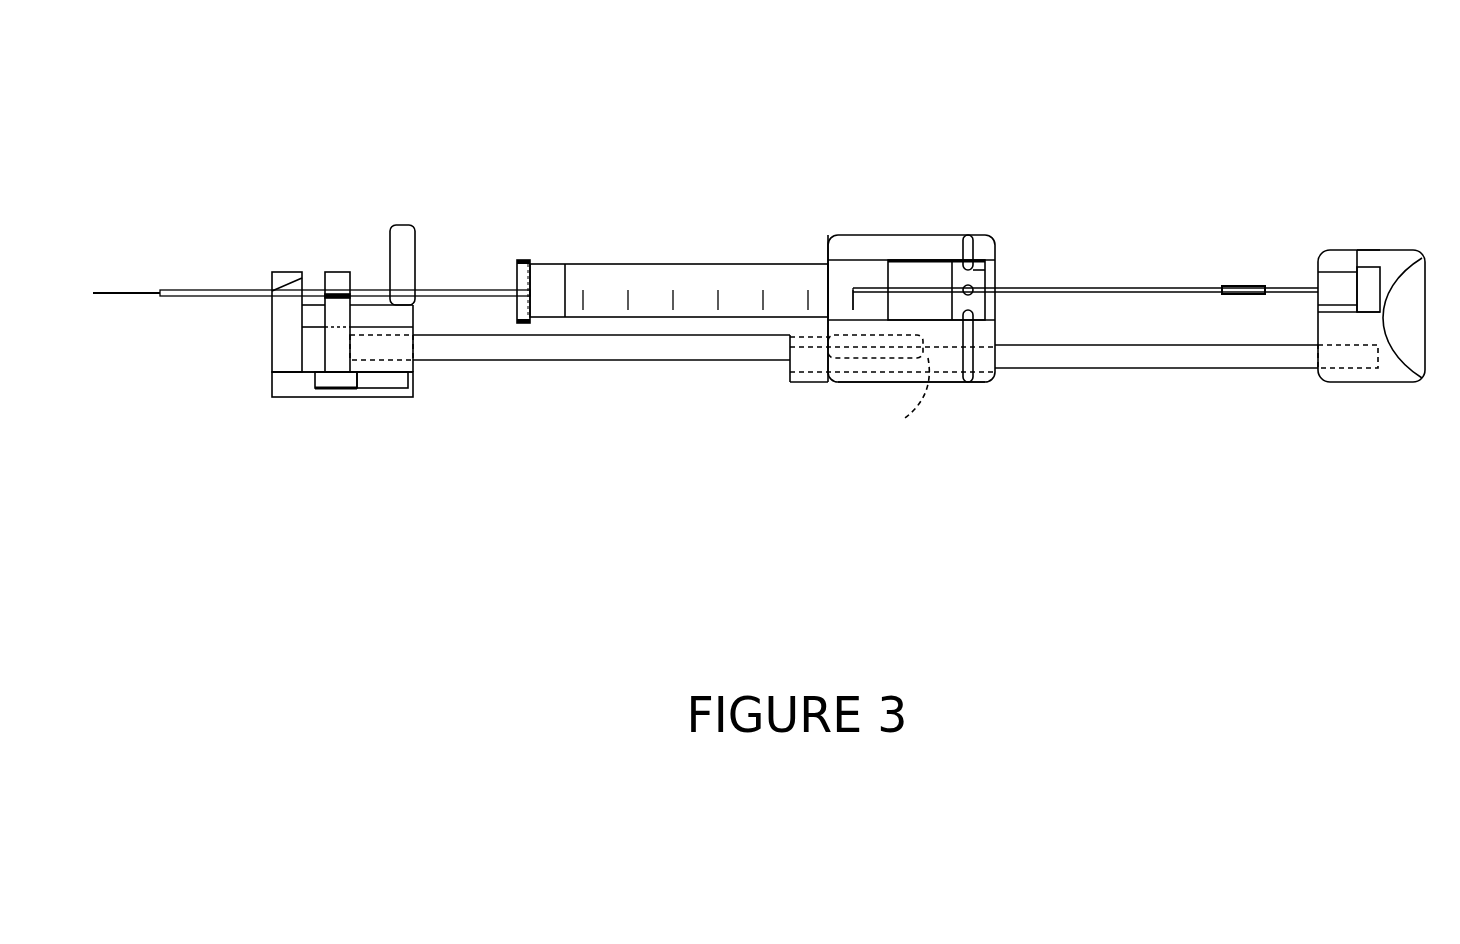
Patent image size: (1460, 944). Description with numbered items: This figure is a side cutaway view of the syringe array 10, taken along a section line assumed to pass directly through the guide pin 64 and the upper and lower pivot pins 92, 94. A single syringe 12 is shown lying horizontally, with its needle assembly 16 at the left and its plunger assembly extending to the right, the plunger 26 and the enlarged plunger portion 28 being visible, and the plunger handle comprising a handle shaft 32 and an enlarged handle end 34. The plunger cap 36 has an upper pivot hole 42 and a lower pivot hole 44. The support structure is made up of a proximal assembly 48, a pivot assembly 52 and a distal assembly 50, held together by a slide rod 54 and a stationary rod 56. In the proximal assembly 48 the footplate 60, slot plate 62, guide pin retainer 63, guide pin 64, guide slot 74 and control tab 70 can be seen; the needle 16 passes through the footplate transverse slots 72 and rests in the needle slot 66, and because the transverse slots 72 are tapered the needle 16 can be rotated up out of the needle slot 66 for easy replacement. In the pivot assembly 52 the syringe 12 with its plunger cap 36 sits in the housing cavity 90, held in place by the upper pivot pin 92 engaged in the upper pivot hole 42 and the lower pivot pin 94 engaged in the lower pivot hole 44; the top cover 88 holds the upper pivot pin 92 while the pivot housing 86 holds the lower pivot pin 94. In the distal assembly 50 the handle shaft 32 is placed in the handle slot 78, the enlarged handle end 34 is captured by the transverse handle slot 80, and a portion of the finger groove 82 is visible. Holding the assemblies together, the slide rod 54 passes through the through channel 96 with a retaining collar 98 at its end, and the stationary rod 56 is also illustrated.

The syringe array 10 is at (368, 120).
The syringe 12 is at (665, 232).
The needle assembly 16 is at (173, 287).
The plunger 26 is at (1175, 288).
The enlarged plunger portion 28 is at (1245, 285).
The handle shaft 32 is at (1350, 287).
The enlarged handle end 34 is at (1370, 275).
The plunger cap 36 is at (980, 270).
The upper pivot hole 42 is at (960, 262).
The lower pivot hole 44 is at (975, 313).
The proximal assembly 48 is at (380, 422).
The distal assembly 50 is at (1415, 425).
The pivot assembly 52 is at (980, 475).
The slide rod 54 is at (1133, 368).
The stationary rod 56 is at (575, 345).
The footplate 60 is at (278, 333).
The slot plate 62 is at (312, 362).
The guide pin retainer 63 is at (395, 383).
The guide pin 64 is at (333, 363).
The needle slot 66 is at (343, 277).
The control tab 70 is at (402, 233).
The footplate transverse slots 72 is at (290, 300).
The guide slot 74 is at (395, 385).
The handle slot 78 is at (1318, 272).
The transverse handle slot 80 is at (1365, 262).
The finger groove 82 is at (1410, 325).
The pivot housing 86 is at (868, 382).
The top cover 88 is at (882, 245).
The housing cavity 90 is at (825, 262).
The upper pivot pin 92 is at (965, 245).
The lower pivot pin 94 is at (970, 382).
The through channel 96 is at (904, 406).
The retaining collar 98 is at (822, 372).